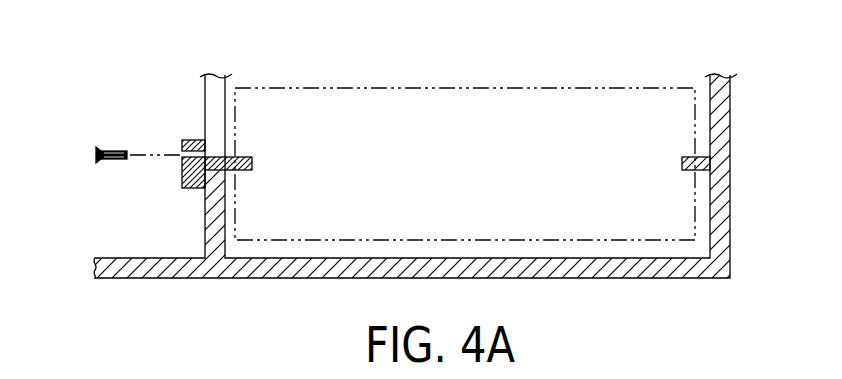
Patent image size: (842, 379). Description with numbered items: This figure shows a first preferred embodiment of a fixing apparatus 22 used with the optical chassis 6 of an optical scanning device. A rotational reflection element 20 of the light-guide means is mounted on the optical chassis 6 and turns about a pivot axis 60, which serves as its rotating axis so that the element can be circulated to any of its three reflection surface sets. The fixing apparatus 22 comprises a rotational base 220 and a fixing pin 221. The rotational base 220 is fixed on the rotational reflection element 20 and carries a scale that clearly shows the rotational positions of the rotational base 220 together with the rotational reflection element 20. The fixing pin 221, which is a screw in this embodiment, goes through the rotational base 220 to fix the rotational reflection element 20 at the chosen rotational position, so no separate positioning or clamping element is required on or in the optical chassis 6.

The optical chassis 6 is at (727, 91).
The pivot axis 60 is at (703, 165).
The rotational reflection element 20 is at (441, 100).
The fixing apparatus 22 is at (188, 99).
The rotational base 220 is at (183, 141).
The fixing pin 221 is at (99, 146).